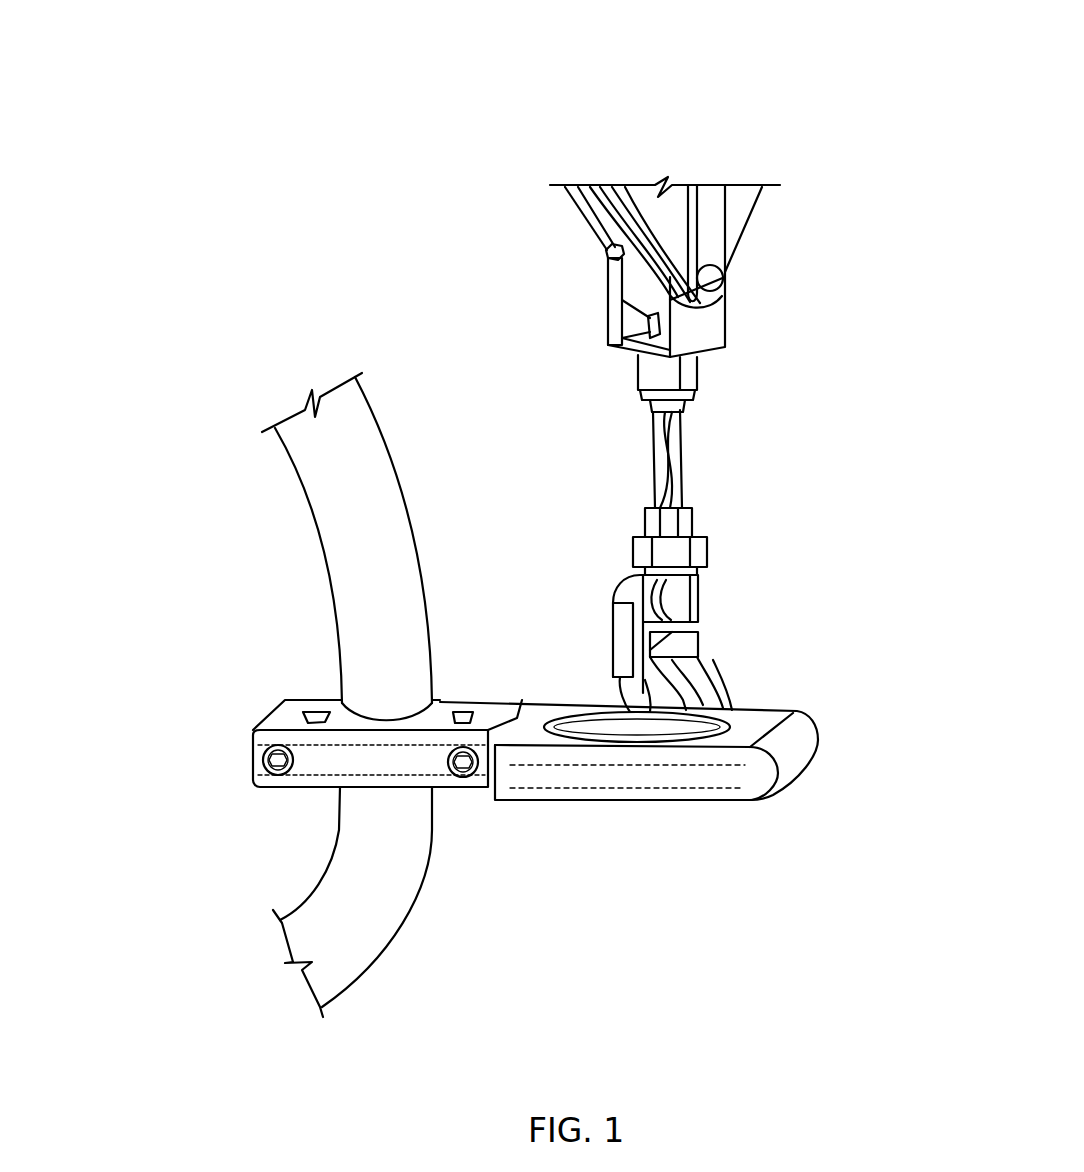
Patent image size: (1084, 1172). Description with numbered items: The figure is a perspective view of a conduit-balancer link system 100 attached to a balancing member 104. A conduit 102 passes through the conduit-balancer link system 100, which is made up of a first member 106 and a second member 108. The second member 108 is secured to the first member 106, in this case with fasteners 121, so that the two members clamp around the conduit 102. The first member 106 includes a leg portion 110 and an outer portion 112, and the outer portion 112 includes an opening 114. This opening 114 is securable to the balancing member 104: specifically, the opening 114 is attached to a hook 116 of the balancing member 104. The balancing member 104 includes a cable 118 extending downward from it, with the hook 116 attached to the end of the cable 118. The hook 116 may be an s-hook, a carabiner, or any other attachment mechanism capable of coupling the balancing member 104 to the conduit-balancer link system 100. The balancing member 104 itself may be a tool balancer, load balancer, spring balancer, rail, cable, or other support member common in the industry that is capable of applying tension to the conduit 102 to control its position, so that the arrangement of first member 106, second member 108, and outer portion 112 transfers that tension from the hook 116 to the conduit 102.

The conduit-balancer link system 100 is at (790, 72).
The conduit 102 is at (403, 490).
The balancing member 104 is at (724, 333).
The first member 106 is at (455, 700).
The second member 108 is at (293, 792).
The leg portion 110 is at (305, 698).
The outer portion 112 is at (745, 728).
The opening 114 is at (688, 727).
The hook 116 is at (700, 673).
The cable 118 is at (682, 425).
The fasteners 121 is at (255, 757).